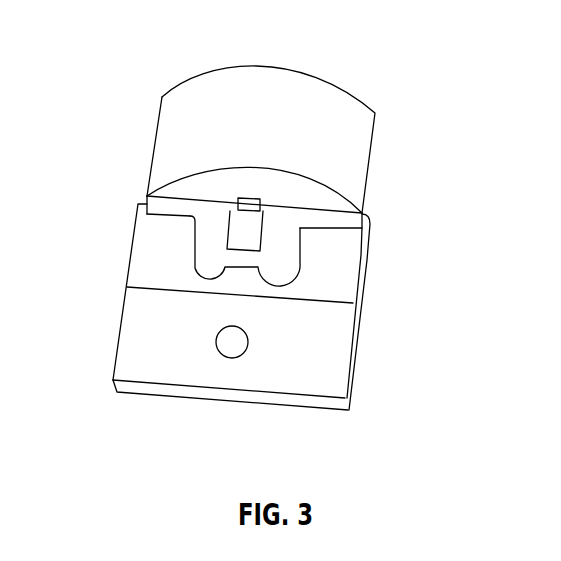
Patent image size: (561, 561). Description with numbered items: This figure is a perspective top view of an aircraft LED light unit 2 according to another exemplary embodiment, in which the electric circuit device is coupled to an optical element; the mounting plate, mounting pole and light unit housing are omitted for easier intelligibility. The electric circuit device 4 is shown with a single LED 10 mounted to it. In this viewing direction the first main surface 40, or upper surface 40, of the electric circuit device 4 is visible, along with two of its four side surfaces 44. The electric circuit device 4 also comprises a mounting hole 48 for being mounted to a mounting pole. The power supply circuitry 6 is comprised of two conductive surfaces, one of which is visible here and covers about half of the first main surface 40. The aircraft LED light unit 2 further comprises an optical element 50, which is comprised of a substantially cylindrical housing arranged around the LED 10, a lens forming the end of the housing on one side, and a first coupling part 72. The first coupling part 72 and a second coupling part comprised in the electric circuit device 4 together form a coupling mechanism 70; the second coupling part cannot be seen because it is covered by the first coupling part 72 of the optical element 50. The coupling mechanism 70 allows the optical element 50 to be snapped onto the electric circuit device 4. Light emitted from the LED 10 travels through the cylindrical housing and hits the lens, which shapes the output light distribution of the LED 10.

The aircraft LED light unit 2 is at (113, 50).
The electric circuit device 4 is at (354, 353).
The power supply circuitry 6 is at (142, 260).
The LED 10 is at (249, 198).
The first main surface 40 is at (132, 338).
The side surfaces 44 is at (352, 397).
The mounting hole 48 is at (228, 358).
The optical element 50 is at (371, 150).
The coupling mechanism 70 is at (138, 195).
The first coupling part 72 is at (297, 265).